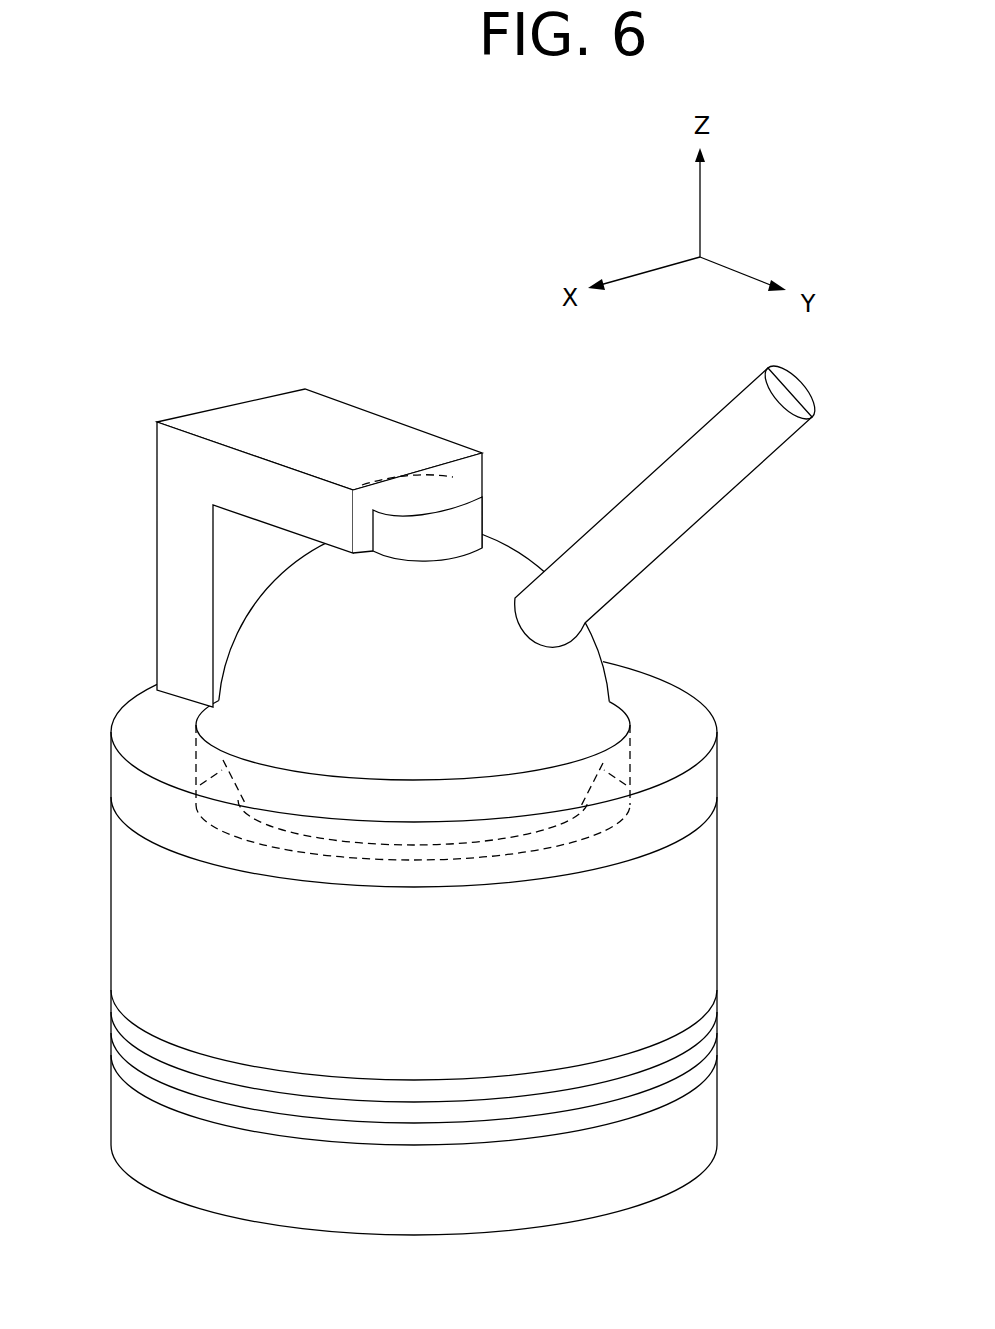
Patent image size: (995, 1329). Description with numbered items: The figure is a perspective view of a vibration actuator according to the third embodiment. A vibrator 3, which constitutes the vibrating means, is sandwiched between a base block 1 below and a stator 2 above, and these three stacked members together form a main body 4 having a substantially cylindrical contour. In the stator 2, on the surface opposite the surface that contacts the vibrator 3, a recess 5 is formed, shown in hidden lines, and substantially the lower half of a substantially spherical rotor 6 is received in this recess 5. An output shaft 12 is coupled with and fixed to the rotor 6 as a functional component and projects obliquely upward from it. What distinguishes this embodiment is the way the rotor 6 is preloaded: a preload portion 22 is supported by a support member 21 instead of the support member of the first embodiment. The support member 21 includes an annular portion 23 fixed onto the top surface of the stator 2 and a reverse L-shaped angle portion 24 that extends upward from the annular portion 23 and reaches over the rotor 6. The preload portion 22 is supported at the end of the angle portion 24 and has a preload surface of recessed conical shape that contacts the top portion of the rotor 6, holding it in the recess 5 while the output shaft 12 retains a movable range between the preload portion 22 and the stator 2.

The base block 1 is at (718, 1122).
The stator 2 is at (718, 927).
The vibrator 3 is at (718, 1040).
The main body 4 is at (440, 948).
The recess 5 is at (285, 835).
The rotor 6 is at (598, 636).
The output shaft 12 is at (733, 487).
The support member 21 is at (304, 548).
The preload portion 22 is at (485, 520).
The annular portion 23 is at (718, 778).
The angle portion 24 is at (155, 511).